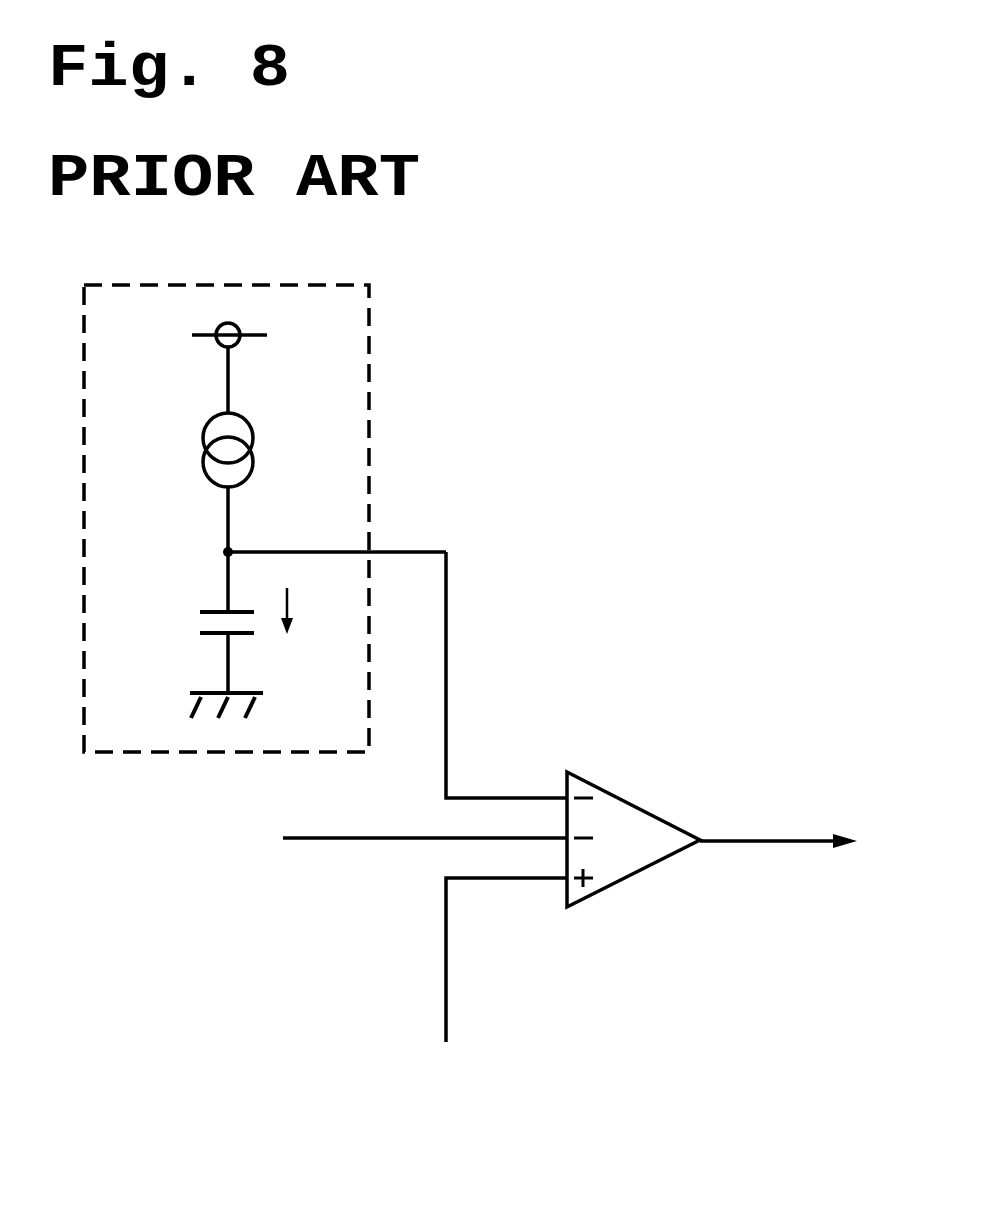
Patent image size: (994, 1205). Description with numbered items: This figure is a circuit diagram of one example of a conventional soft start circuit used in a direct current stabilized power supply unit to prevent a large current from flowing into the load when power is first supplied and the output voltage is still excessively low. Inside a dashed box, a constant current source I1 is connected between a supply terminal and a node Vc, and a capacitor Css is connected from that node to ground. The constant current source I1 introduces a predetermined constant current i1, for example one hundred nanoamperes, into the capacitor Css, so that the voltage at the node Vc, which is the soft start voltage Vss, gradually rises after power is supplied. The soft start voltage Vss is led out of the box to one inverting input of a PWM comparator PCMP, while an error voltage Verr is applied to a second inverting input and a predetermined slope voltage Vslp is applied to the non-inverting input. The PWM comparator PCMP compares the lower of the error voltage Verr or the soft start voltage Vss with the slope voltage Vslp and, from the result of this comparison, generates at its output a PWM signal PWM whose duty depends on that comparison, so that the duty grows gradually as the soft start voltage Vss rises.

The constant current source I1 is at (253, 447).
The capacitor voltage node Vc is at (212, 549).
The capacitor Css is at (202, 624).
The constant current i1 is at (283, 640).
The soft start voltage Vss is at (506, 676).
The error voltage Verr is at (425, 865).
The slope voltage Vslp is at (506, 960).
The PWM comparator PCMP is at (657, 774).
The PWM signal PWM is at (801, 817).